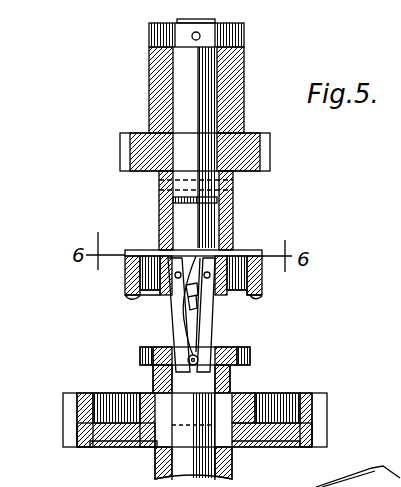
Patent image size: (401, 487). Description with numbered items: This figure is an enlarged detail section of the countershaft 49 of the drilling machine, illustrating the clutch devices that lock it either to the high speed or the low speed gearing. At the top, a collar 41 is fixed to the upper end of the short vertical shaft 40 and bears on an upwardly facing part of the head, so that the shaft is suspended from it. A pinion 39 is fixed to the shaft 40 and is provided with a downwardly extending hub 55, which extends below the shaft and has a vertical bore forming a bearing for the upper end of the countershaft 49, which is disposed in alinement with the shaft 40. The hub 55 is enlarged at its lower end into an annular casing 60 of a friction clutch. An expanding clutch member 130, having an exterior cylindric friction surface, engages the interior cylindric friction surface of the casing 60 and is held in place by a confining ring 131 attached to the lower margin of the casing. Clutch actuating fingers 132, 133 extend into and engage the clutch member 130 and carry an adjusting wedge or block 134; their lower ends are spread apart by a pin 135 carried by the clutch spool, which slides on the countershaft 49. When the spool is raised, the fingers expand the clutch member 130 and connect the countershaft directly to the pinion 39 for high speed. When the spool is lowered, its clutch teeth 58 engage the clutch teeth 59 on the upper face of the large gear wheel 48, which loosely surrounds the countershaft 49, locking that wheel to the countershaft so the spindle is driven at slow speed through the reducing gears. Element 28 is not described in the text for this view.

The upper body 28 is at (140, 86).
The collar 41 is at (217, 33).
The short vertical shaft 40 is at (204, 97).
The pinion 39 is at (140, 172).
The downwardly extending hub 55 is at (233, 210).
The adjusting wedge or block 134 is at (226, 252).
The casing 60 is at (128, 272).
The expanding clutch member 130 is at (128, 292).
The confining ring 131 is at (258, 294).
The clutch actuating finger 132 is at (180, 333).
The clutch actuating finger 133 is at (203, 332).
The pin 135 is at (200, 361).
The clutch teeth 58 is at (245, 410).
The clutch teeth 59 is at (277, 413).
The large gear wheel 48 is at (305, 431).
The countershaft 49 is at (197, 463).